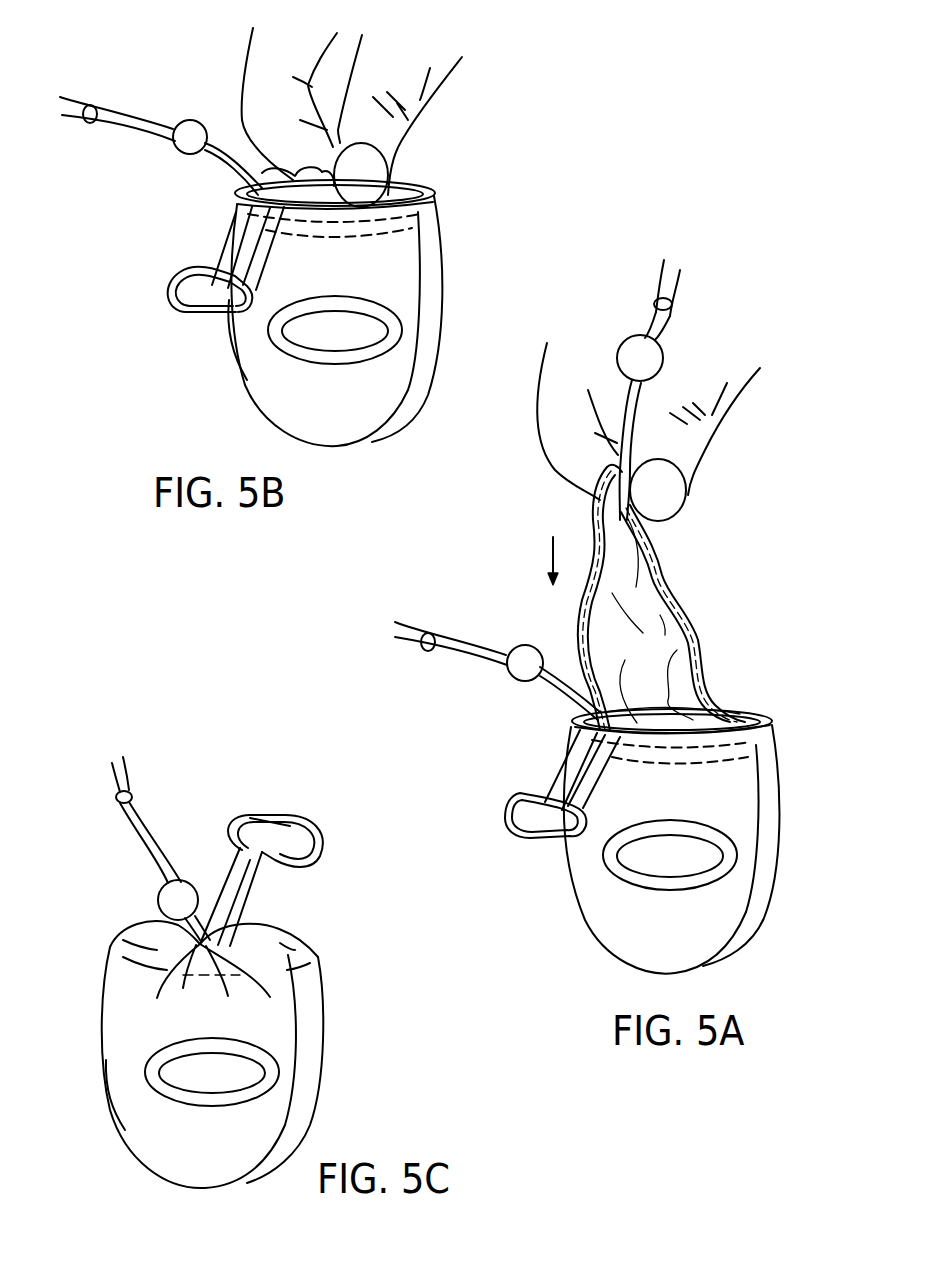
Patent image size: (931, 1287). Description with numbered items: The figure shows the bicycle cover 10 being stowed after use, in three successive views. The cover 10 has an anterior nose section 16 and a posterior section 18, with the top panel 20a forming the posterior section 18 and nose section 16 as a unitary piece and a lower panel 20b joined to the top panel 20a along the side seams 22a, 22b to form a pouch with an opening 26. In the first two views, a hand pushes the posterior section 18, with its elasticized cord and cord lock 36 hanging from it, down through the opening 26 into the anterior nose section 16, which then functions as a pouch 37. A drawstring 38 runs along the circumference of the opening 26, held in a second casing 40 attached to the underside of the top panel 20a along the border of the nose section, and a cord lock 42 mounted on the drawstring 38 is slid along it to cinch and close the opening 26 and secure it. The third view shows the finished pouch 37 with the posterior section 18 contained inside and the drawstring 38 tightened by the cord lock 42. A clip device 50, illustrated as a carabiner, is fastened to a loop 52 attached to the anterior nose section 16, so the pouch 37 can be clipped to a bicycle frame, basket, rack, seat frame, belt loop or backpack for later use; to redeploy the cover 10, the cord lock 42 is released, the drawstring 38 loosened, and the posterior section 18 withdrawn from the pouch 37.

In FIG. 5B, the cover 10 is at (288, 239).
In FIG. 5A, the cover 10 is at (612, 617).
In FIG. 5C, the cover 10 is at (210, 975).
In FIG. 5B, the anterior nose section 16 is at (322, 315).
In FIG. 5A, the anterior nose section 16 is at (688, 841).
In FIG. 5C, the anterior nose section 16 is at (198, 1057).
In FIG. 5A, the posterior section 18 is at (668, 622).
In FIG. 5A, the top panel 20a is at (738, 916).
In FIG. 5A, the lower panel 20b is at (757, 885).
In FIG. 5A, the side seam 22a is at (748, 796).
In FIG. 5A, the side seam 22b is at (752, 832).
In FIG. 5A, the opening 26 is at (746, 690).
In FIG. 5A, the cord lock 36 is at (652, 357).
In FIG. 5B, the pouch 37 is at (247, 375).
In FIG. 5C, the pouch 37 is at (125, 1118).
In FIG. 5B, the drawstring 38 is at (161, 135).
In FIG. 5A, the drawstring 38 is at (580, 453).
In FIG. 5C, the drawstring 38 is at (143, 848).
In FIG. 5B, the second casing 40 is at (190, 128).
In FIG. 5A, the cord lock 42 is at (523, 650).
In FIG. 5C, the cord lock 42 is at (160, 898).
In FIG. 5B, the clip device 50 is at (172, 298).
In FIG. 5A, the clip device 50 is at (512, 812).
In FIG. 5C, the clip device 50 is at (312, 860).
In FIG. 5B, the loop 52 is at (222, 258).
In FIG. 5A, the loop 52 is at (566, 779).
In FIG. 5C, the loop 52 is at (247, 890).